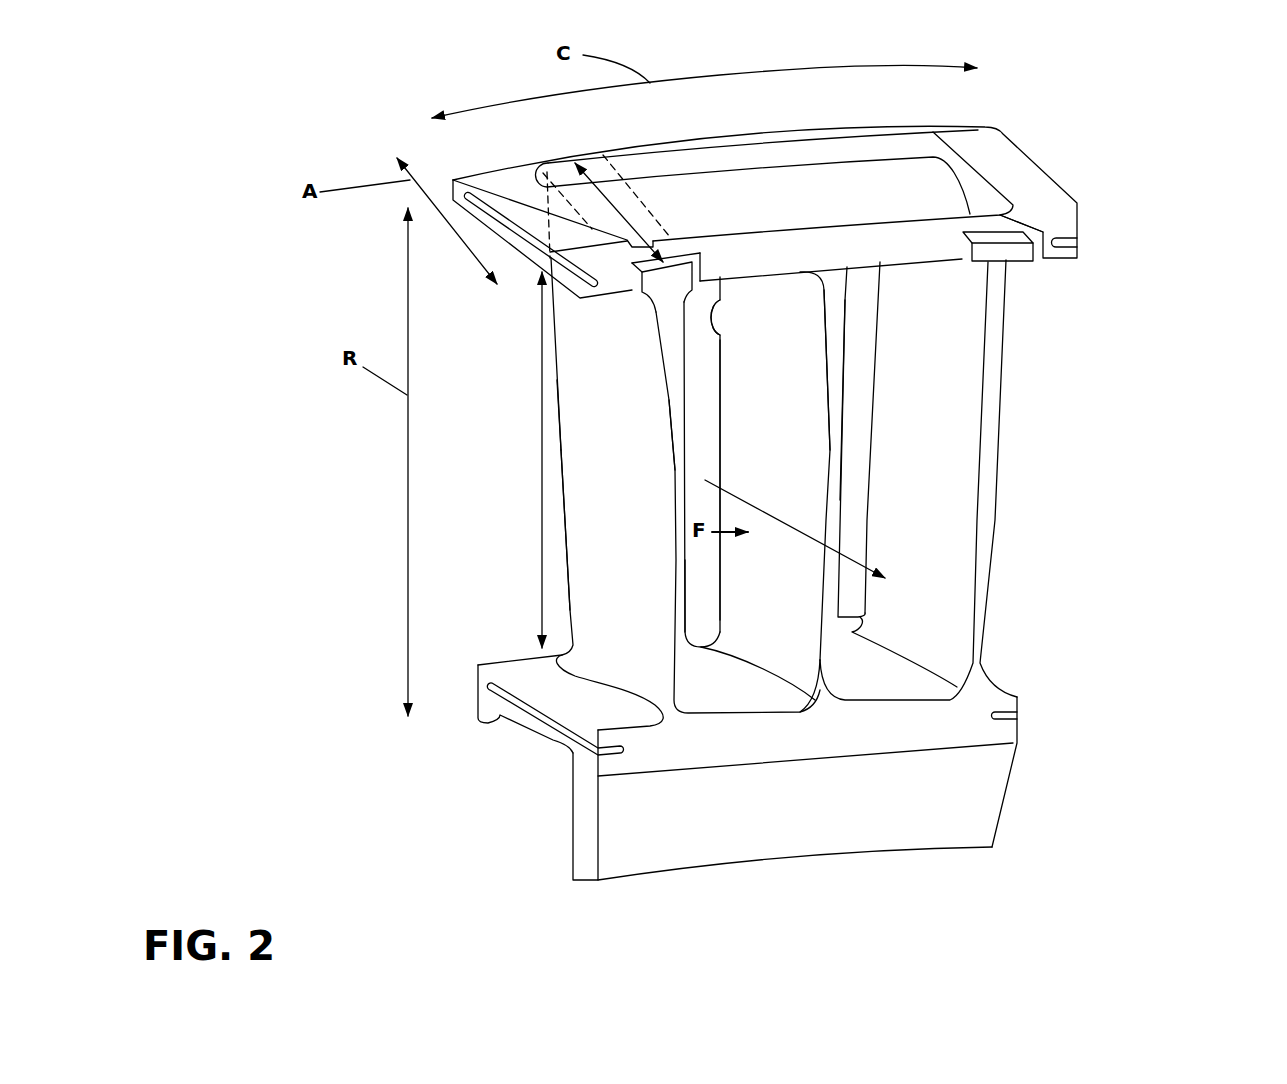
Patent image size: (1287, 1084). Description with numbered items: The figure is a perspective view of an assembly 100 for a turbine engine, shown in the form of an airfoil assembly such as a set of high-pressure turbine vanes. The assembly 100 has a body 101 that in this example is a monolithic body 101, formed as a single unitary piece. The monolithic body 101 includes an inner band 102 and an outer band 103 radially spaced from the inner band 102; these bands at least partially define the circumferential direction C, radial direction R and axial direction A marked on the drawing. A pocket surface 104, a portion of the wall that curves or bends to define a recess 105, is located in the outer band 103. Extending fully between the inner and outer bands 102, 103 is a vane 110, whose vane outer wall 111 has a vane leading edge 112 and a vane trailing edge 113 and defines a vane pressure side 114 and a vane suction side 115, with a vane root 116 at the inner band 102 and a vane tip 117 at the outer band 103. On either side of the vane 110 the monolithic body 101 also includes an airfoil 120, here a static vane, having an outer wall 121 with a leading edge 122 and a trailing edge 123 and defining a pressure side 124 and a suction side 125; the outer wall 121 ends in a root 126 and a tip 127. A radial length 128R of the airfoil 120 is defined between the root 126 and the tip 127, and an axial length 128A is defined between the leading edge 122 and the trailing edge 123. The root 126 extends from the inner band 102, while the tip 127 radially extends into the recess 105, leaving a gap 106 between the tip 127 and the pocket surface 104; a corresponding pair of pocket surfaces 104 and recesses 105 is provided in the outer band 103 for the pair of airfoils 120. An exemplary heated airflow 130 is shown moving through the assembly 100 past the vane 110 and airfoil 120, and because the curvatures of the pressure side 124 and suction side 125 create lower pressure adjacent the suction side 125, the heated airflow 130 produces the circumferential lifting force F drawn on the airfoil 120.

The assembly 100 is at (1163, 152).
The body 101 is at (1038, 160).
The inner band 102 is at (1000, 732).
The outer band 103 is at (1062, 223).
The pocket surface 104 is at (978, 243).
The recess 105 is at (1040, 226).
The gap 106 is at (705, 263).
The vane 110 is at (779, 636).
The vane outer wall 111 is at (798, 421).
The vane leading edge 112 is at (723, 335).
The vane trailing edge 113 is at (837, 443).
The vane pressure side 114 is at (802, 377).
The vane suction side 115 is at (845, 477).
The vane root 116 is at (822, 672).
The vane tip 117 is at (837, 309).
The airfoil 120 is at (630, 664).
The outer wall 121 is at (639, 411).
The leading edge 122 is at (558, 415).
The trailing edge 123 is at (670, 540).
The pressure side 124 is at (598, 477).
The suction side 125 is at (686, 572).
The root 126 is at (683, 705).
The tip 127 is at (675, 277).
The axial length 128A is at (620, 216).
The radial length 128R is at (542, 352).
The heated airflow 130 is at (843, 547).